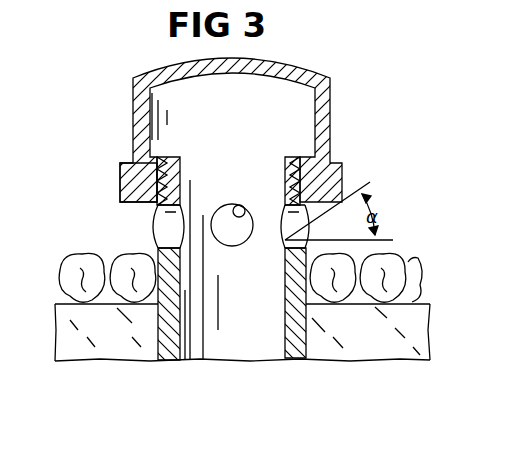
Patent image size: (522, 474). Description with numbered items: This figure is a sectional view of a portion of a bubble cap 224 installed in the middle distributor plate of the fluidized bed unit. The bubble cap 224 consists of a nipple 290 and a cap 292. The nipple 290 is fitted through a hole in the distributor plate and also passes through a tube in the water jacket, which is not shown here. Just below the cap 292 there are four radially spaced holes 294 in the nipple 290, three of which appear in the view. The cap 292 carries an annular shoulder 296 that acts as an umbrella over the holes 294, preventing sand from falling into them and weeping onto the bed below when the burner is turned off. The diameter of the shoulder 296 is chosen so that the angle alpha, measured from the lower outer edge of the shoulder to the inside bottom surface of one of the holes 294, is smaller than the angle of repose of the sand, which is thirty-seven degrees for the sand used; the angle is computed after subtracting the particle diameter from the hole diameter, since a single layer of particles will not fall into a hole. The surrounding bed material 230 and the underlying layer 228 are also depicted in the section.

The bubble cap 224 is at (108, 104).
The cap 292 is at (252, 59).
The annular shoulder 296 is at (118, 173).
The nipple 290 is at (283, 345).
The holes 294 is at (158, 222).
The cushion material 230 is at (395, 266).
The substrate layer 228 is at (384, 355).